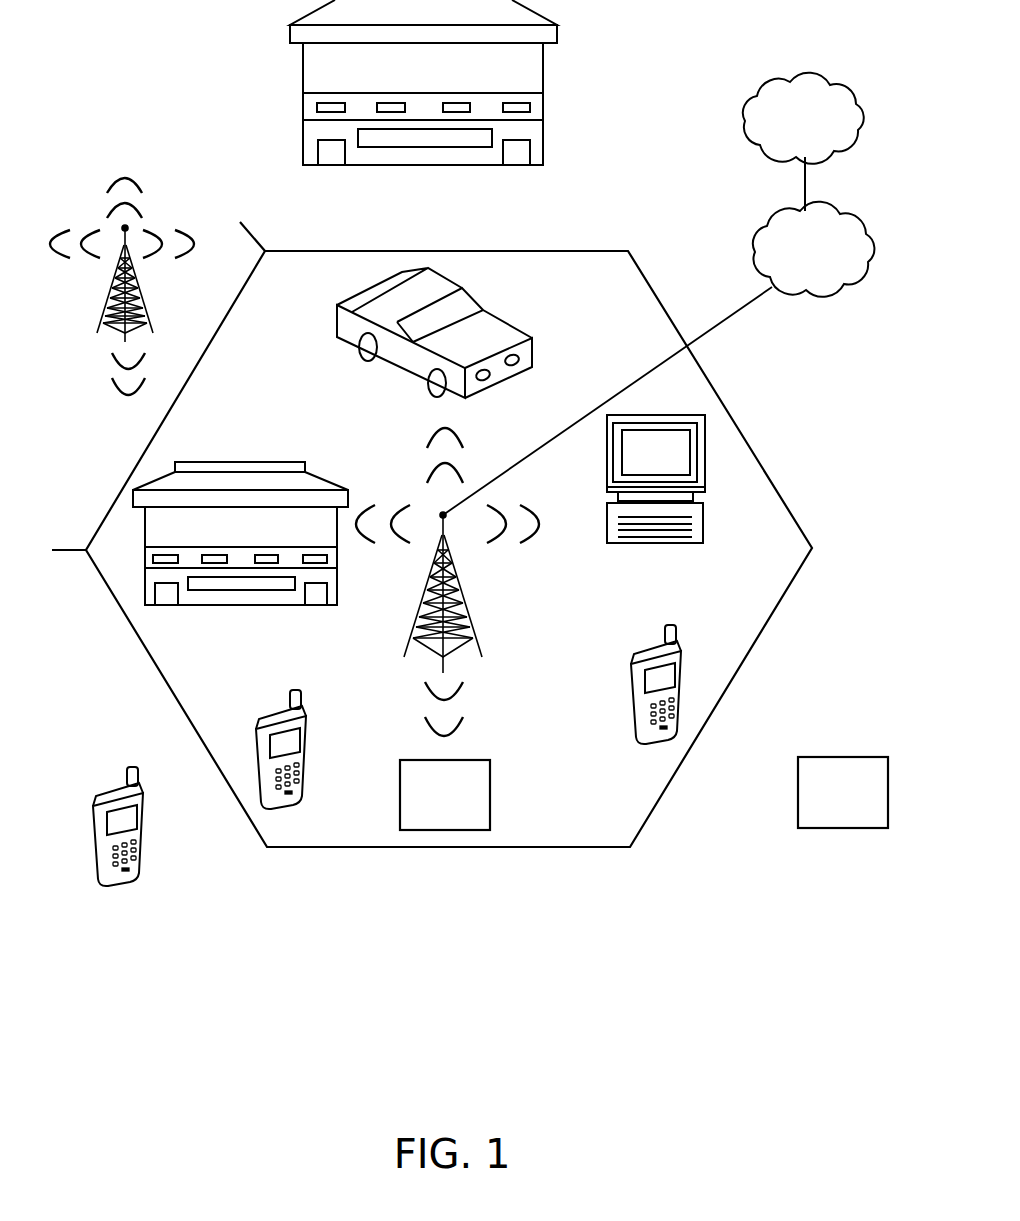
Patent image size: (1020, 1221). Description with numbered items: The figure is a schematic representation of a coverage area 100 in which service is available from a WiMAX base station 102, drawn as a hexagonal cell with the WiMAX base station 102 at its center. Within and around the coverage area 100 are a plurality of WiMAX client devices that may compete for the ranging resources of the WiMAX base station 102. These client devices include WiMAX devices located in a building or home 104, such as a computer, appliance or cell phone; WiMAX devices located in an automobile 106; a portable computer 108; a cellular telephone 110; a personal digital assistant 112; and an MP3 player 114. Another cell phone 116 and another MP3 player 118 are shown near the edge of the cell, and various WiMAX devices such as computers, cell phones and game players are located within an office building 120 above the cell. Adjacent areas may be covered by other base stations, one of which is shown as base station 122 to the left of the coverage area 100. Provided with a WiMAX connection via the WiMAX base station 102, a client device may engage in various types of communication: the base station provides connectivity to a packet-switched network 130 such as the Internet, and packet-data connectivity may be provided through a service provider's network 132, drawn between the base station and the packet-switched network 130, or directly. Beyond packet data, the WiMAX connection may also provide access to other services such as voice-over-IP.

The coverage area 100 is at (515, 847).
The WiMAX base station 102 is at (473, 630).
The building or home 104 is at (242, 460).
The automobile 106 is at (531, 358).
The portable computer 108 is at (703, 528).
The cellular telephone 110 is at (628, 723).
The personal digital assistant 112 is at (310, 765).
The MP3 player 114 is at (490, 798).
The cell phone 116 is at (142, 843).
The MP3 player 118 is at (798, 812).
The office building 120 is at (543, 130).
The base station 122 is at (140, 313).
The packet-switched network 130 is at (752, 140).
The service provider's network 132 is at (752, 242).